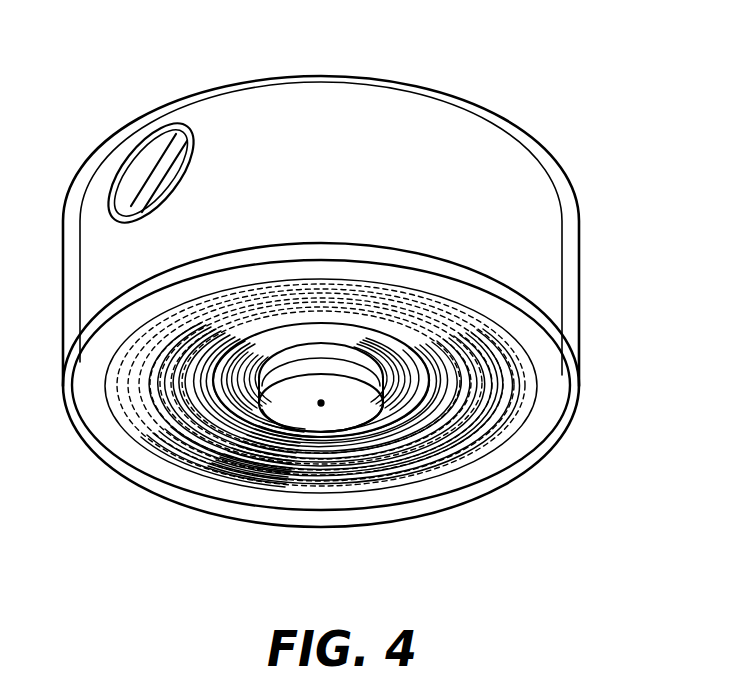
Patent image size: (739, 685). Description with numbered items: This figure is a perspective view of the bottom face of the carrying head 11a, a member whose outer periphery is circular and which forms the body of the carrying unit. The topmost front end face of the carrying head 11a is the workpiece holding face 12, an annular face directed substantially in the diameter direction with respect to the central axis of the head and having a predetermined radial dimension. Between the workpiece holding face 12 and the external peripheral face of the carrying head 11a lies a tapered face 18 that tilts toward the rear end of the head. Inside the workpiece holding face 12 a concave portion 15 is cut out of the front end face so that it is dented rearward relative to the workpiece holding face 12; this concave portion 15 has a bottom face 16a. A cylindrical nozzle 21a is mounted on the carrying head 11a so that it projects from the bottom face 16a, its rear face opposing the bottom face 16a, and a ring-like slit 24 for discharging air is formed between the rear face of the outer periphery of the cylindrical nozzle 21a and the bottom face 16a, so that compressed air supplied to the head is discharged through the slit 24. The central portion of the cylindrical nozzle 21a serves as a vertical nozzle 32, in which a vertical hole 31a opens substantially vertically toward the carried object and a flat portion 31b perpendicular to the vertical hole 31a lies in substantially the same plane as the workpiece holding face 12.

The carrying head 11a is at (521, 178).
The slit 24 is at (358, 350).
The tapered face 18 is at (571, 386).
The workpiece holding face 12 is at (545, 425).
The concave portion 15 is at (182, 444).
The bottom face 16a is at (445, 424).
The vertical hole 31a is at (321, 404).
The flat portion 31b is at (283, 405).
The vertical nozzle 32 is at (277, 420).
The cylindrical nozzle 21a is at (358, 413).